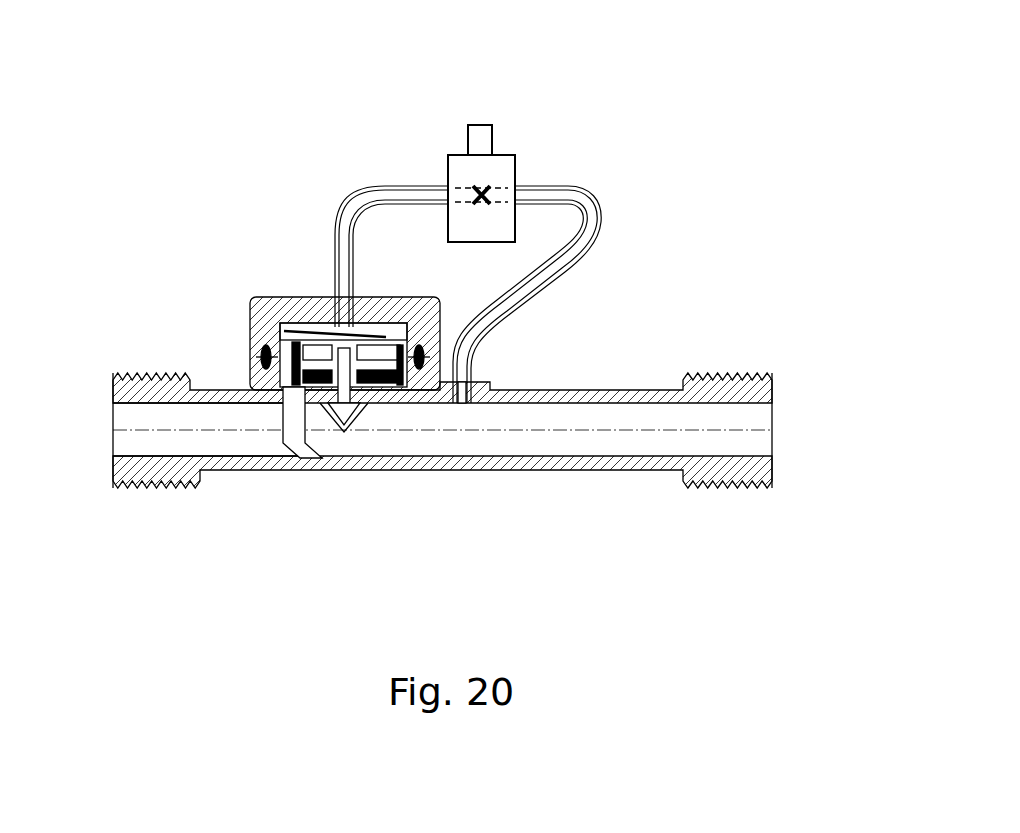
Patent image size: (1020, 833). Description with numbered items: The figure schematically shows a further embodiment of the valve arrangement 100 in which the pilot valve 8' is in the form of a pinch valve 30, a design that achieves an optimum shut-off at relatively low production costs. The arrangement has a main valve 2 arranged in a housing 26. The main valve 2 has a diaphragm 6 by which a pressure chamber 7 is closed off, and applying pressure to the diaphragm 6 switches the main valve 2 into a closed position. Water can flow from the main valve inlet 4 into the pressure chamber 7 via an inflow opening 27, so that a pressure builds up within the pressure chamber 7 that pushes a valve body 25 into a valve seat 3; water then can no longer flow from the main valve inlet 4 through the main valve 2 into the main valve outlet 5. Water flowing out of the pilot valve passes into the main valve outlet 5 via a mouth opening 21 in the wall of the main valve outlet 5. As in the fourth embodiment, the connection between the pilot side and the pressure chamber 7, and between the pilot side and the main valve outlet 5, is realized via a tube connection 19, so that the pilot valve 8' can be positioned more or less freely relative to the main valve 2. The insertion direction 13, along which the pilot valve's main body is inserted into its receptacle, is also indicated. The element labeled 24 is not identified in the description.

The valve arrangement 100 is at (604, 66).
The insertion direction 13 is at (925, 0).
The valve seat 3 is at (316, 328).
The pilot valve 8' is at (513, 164).
The pinch valve 30 is at (497, 192).
The housing cover 24 is at (282, 297).
The pressure chamber 7 is at (281, 307).
The main valve 2 is at (235, 220).
The inflow opening 27 is at (245, 375).
The main valve inlet 4 is at (145, 432).
The tube connection 19 is at (476, 303).
The diaphragm 6 is at (378, 400).
The mouth opening 21 is at (461, 395).
The housing 26 is at (291, 457).
The valve body 25 is at (326, 445).
The main valve outlet 5 is at (585, 427).